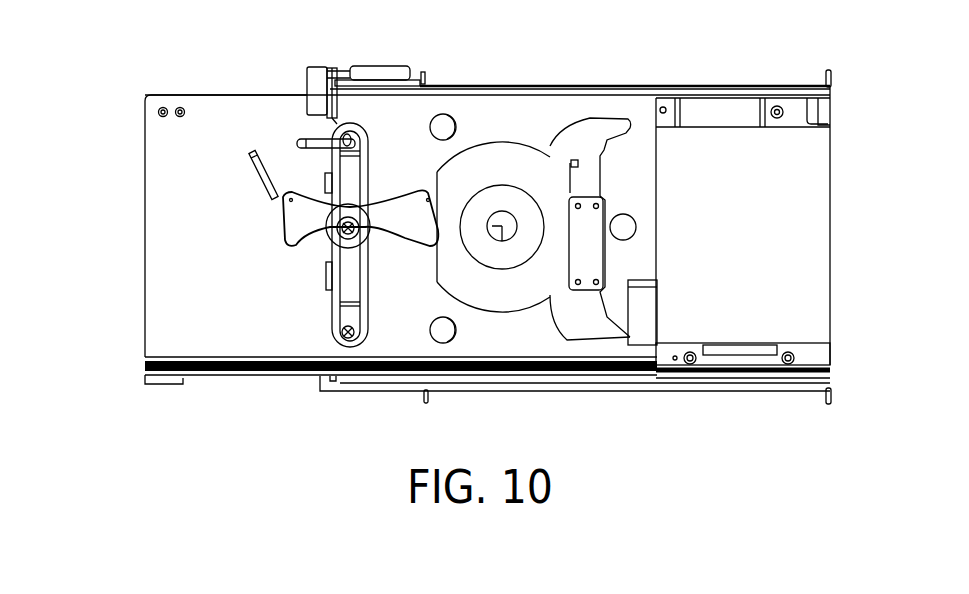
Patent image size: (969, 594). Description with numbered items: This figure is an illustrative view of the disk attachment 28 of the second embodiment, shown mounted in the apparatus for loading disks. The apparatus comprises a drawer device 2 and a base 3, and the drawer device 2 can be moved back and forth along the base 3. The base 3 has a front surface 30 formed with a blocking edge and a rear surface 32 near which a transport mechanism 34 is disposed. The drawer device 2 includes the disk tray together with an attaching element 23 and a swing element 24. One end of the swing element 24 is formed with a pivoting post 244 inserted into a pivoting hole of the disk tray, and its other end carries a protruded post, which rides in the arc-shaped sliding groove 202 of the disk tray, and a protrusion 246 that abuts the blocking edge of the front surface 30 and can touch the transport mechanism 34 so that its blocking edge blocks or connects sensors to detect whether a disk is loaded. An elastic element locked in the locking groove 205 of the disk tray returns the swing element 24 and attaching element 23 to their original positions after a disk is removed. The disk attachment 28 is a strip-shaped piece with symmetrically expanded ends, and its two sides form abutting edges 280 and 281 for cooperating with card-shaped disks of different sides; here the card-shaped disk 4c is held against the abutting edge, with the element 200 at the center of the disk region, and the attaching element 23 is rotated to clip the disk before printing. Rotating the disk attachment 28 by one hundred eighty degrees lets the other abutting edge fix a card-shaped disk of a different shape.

The drawer device 2 is at (127, 130).
The base 3 is at (766, 52).
The front surface 30 is at (834, 104).
The rear surface 32 is at (303, 72).
The transport mechanism 34 is at (372, 62).
The protrusion 246 is at (331, 116).
The arc-shaped sliding groove 202 is at (296, 142).
The locking groove 205 is at (251, 177).
The attaching element 23 is at (273, 216).
The swing element 24 is at (336, 288).
The pivoting post 244 is at (343, 332).
The hub 200 is at (490, 220).
The card-shaped disk 4c is at (518, 166).
The abutting edge 281 is at (575, 160).
The abutting edge 280 is at (609, 177).
The disk attachment 28 is at (565, 330).